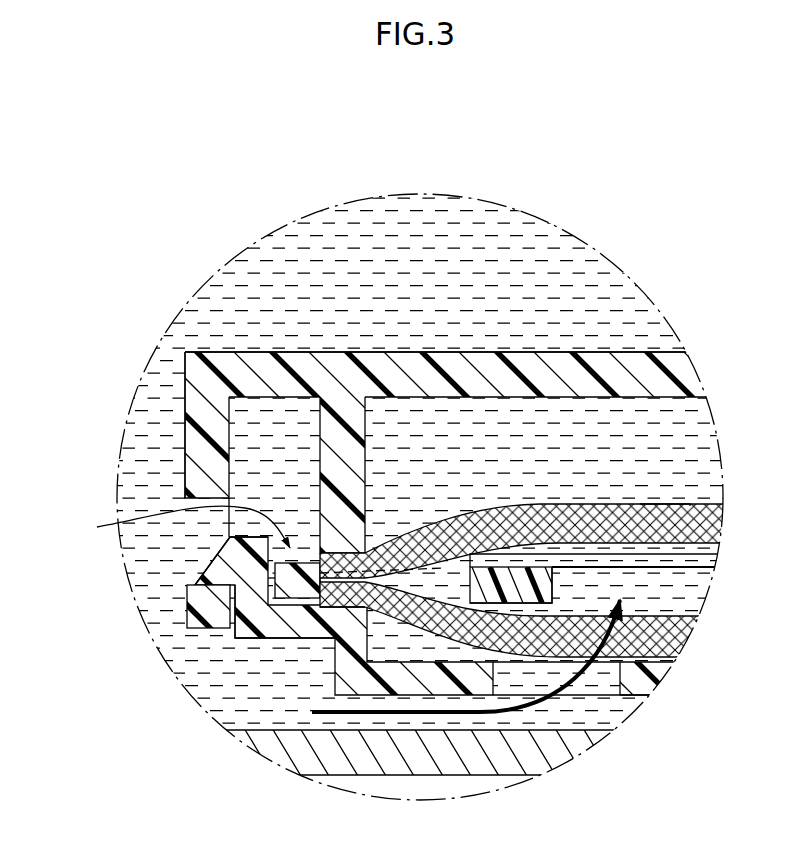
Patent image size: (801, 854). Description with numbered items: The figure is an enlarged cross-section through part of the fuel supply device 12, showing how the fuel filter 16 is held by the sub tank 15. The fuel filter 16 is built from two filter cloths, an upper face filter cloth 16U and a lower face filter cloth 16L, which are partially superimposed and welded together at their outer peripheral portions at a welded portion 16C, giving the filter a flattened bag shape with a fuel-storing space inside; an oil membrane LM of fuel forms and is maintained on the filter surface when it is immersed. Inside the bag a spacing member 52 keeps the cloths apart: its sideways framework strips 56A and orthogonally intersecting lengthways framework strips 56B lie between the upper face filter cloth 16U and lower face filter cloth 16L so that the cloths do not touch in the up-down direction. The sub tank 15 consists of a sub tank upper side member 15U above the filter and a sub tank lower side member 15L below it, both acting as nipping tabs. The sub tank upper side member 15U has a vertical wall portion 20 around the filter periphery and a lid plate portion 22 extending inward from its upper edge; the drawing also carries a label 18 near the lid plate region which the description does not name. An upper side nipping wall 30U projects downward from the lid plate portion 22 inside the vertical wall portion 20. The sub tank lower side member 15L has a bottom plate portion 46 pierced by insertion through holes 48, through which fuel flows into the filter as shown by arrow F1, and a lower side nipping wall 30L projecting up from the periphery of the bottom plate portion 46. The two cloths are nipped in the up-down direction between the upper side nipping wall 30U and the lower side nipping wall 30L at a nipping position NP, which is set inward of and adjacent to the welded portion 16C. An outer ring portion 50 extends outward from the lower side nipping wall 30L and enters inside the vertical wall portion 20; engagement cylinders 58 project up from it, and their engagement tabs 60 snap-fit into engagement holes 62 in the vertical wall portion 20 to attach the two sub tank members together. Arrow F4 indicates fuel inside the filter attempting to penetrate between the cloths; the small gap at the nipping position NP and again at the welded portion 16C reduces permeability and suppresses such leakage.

The device (enlarged cross-section) 12 is at (627, 146).
The sub tank 15 is at (197, 327).
The sub tank upper side member 15U is at (184, 453).
The sub tank lower side member 15L is at (316, 733).
The fuel filter 16 is at (700, 500).
The upper face filter cloth 16U is at (719, 509).
The lower face filter cloth 16L is at (677, 637).
The welded portion 16C is at (298, 566).
The upper surface 18 is at (631, 350).
The vertical wall portion 20 is at (197, 433).
The lid plate portion 22 is at (680, 378).
The upper side nipping wall 30U is at (333, 433).
The lower side nipping wall 30L is at (340, 618).
The bottom plate portion 46 is at (647, 680).
The insertion through holes 48 is at (612, 700).
The outer ring portion 50 is at (314, 600).
The spacing member 52 is at (692, 569).
The sideways framework strips 56A is at (705, 561).
The lengthways framework strips 56B is at (557, 591).
The engagement cylinders 58 is at (252, 606).
The engagement tabs 60 is at (215, 563).
The engagement holes 62 is at (200, 583).
The oil membrane LM is at (660, 498).
The nipping position NP is at (352, 608).
The arrow F1 is at (542, 708).
The arrow F4 is at (179, 527).